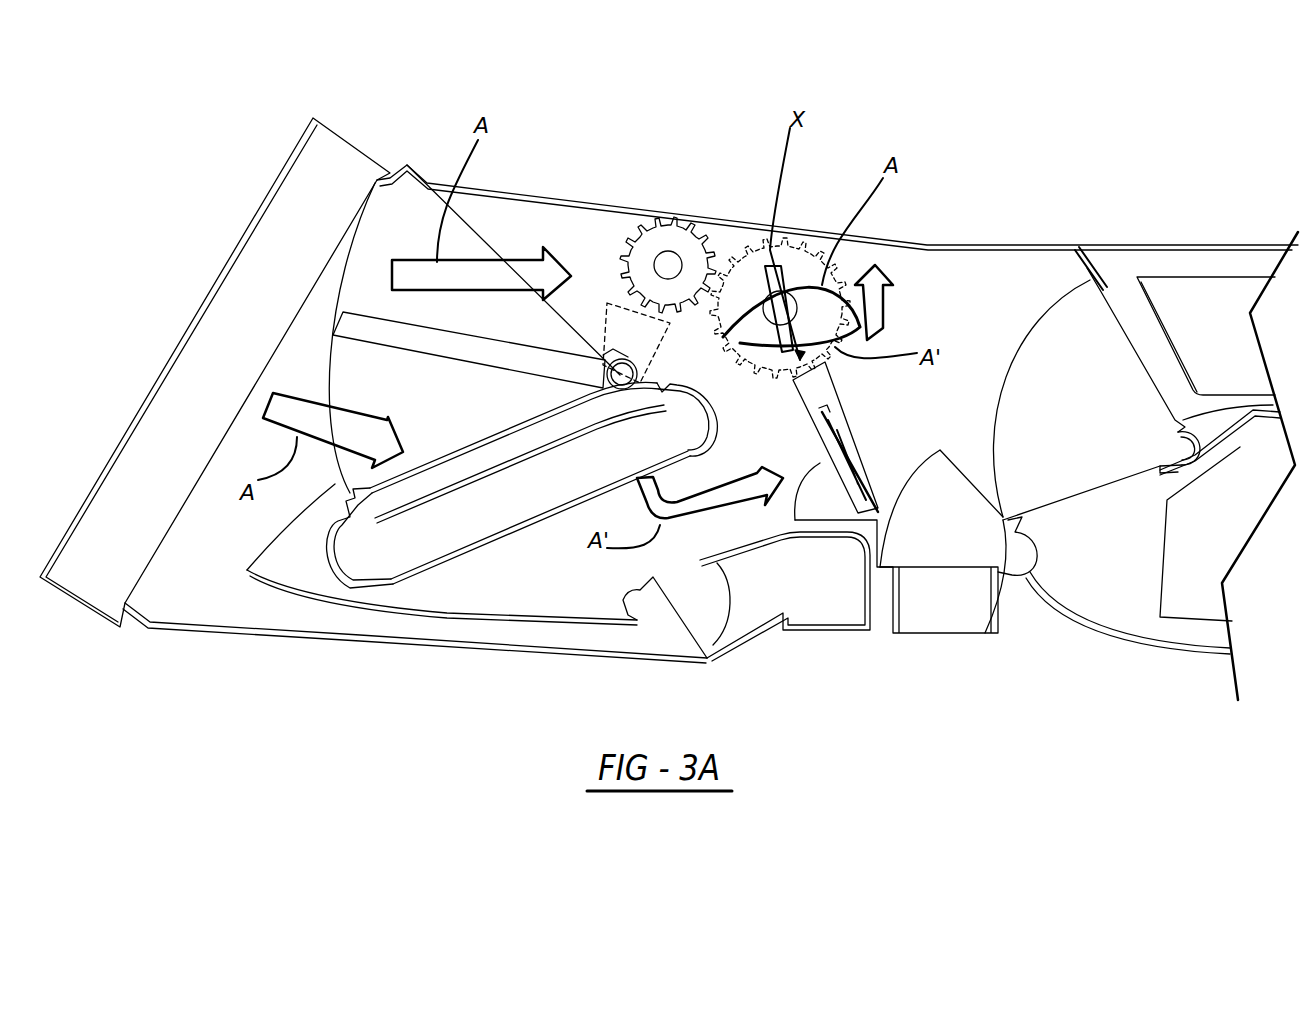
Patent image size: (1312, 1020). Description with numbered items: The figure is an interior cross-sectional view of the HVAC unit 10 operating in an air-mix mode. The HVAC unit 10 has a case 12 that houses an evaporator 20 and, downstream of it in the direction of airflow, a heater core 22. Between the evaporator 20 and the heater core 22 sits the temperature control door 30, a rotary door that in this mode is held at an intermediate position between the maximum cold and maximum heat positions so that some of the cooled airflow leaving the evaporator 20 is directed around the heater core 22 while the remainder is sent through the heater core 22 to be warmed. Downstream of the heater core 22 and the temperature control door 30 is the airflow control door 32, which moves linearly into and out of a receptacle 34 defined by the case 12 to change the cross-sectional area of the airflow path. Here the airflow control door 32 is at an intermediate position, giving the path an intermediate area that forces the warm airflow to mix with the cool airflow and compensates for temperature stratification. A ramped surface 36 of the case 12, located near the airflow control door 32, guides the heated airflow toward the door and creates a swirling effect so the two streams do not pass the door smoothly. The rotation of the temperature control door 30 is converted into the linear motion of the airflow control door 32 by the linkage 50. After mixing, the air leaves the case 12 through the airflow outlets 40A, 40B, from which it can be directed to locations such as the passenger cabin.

The HVAC unit 10 is at (878, 102).
The case 12 is at (967, 250).
The evaporator 20 is at (238, 310).
The heater core 22 is at (453, 522).
The temperature control door 30 is at (393, 335).
The airflow control door 32 is at (837, 380).
The receptacle 34 is at (853, 490).
The ramped surface 36 is at (822, 472).
The airflow outlet 40A is at (1140, 360).
The airflow outlet 40B is at (1093, 490).
The linkage 50 is at (610, 237).